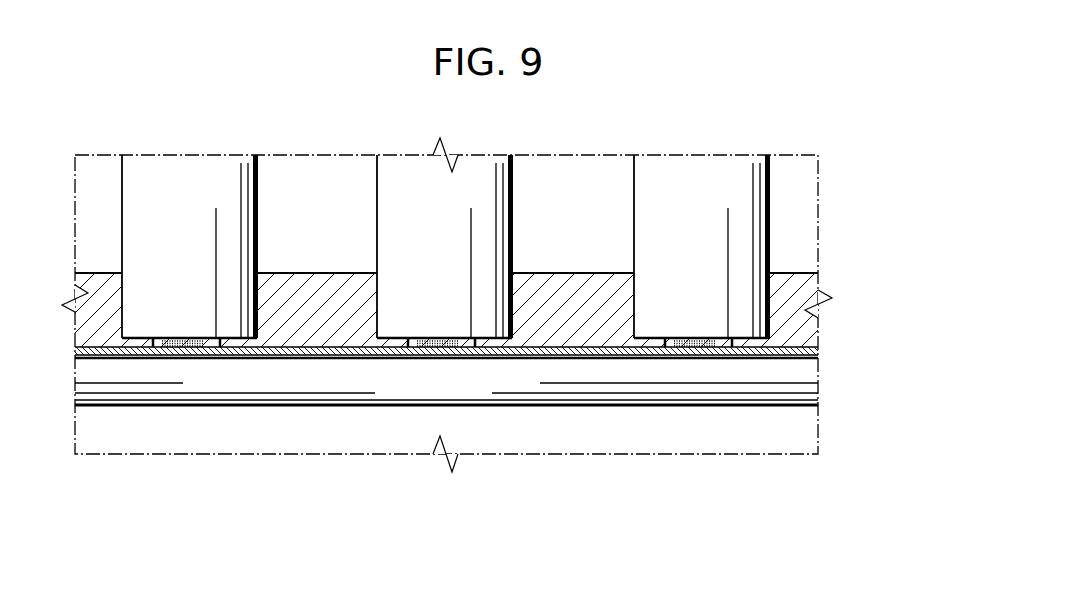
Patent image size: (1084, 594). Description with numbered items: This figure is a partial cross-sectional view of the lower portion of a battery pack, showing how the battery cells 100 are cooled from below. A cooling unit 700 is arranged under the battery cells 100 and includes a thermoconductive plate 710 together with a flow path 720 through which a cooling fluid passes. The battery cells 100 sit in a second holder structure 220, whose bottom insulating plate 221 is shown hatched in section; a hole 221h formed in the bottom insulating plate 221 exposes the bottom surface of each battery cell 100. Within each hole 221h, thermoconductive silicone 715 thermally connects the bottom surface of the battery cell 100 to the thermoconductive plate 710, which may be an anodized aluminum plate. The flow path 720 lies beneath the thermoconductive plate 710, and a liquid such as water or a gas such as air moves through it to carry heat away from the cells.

The battery cell 100 is at (263, 187).
The second holder structure 220 is at (467, 372).
The bottom insulating plate 221 is at (802, 324).
The hole 221h is at (162, 347).
The thermoconductive silicone 715 is at (202, 347).
The cooling unit 700 is at (512, 371).
The thermoconductive plate 710 is at (820, 349).
The flow path 720 is at (805, 387).